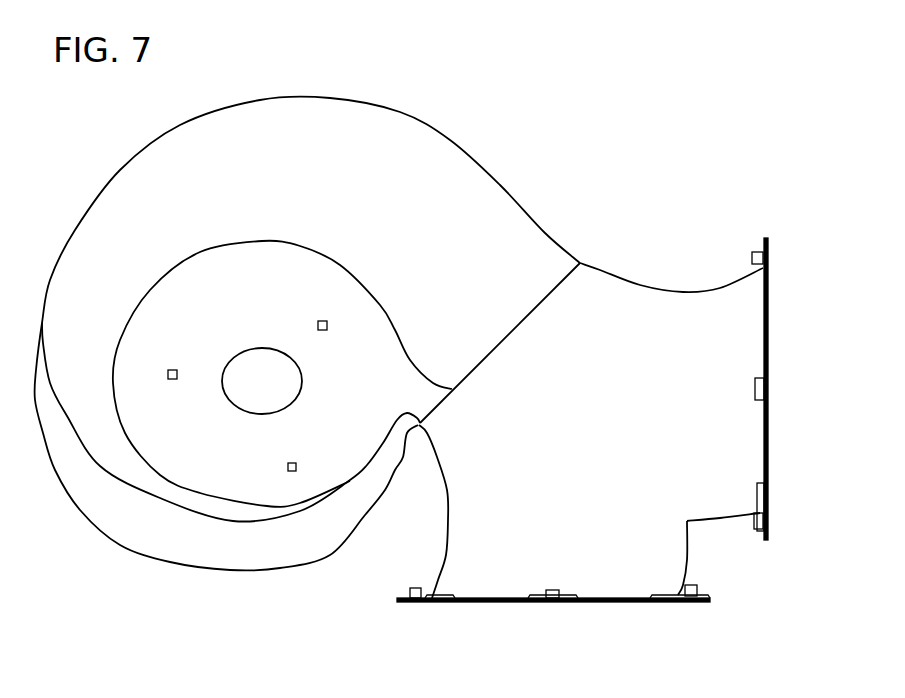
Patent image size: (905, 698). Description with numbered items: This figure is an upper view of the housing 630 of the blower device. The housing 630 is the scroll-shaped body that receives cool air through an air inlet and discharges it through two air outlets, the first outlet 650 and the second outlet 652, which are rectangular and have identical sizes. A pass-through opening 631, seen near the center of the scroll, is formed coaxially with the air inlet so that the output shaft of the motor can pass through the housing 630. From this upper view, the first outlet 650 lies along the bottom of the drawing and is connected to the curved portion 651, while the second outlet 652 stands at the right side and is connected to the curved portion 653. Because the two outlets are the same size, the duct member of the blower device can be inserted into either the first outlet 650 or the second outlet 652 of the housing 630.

The housing 630 is at (370, 100).
The pass-through opening 631 is at (238, 393).
The first outlet 650 is at (586, 603).
The curved portion 651 is at (447, 513).
The second outlet 652 is at (770, 342).
The curved portion 653 is at (668, 290).